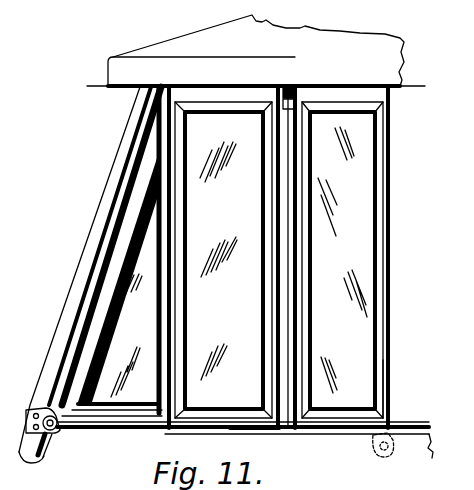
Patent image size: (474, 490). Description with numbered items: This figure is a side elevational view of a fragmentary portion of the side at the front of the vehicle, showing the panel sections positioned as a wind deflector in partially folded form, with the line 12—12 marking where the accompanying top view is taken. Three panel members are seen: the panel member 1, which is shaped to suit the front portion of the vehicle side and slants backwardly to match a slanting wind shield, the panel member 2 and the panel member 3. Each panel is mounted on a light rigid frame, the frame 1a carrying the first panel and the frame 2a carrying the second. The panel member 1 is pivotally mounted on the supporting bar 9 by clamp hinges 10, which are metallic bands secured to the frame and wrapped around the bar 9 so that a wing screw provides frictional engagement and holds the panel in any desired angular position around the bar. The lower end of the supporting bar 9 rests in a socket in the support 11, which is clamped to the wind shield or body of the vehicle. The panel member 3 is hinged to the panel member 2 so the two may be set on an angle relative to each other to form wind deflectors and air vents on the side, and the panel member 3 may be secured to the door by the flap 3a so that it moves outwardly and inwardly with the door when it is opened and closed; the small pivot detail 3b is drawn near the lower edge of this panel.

The panel member 1 is at (90, 275).
The frame 1a is at (100, 308).
The panel member 2 is at (223, 257).
The frame 2a is at (272, 425).
The panel member 3 is at (341, 257).
The flap 3a is at (384, 380).
The pivot pin 3b is at (387, 430).
The supporting bar 9 is at (291, 86).
The clamp hinge 10 is at (296, 98).
The support 11 is at (130, 432).
The section line 12- 12 is at (87, 58).